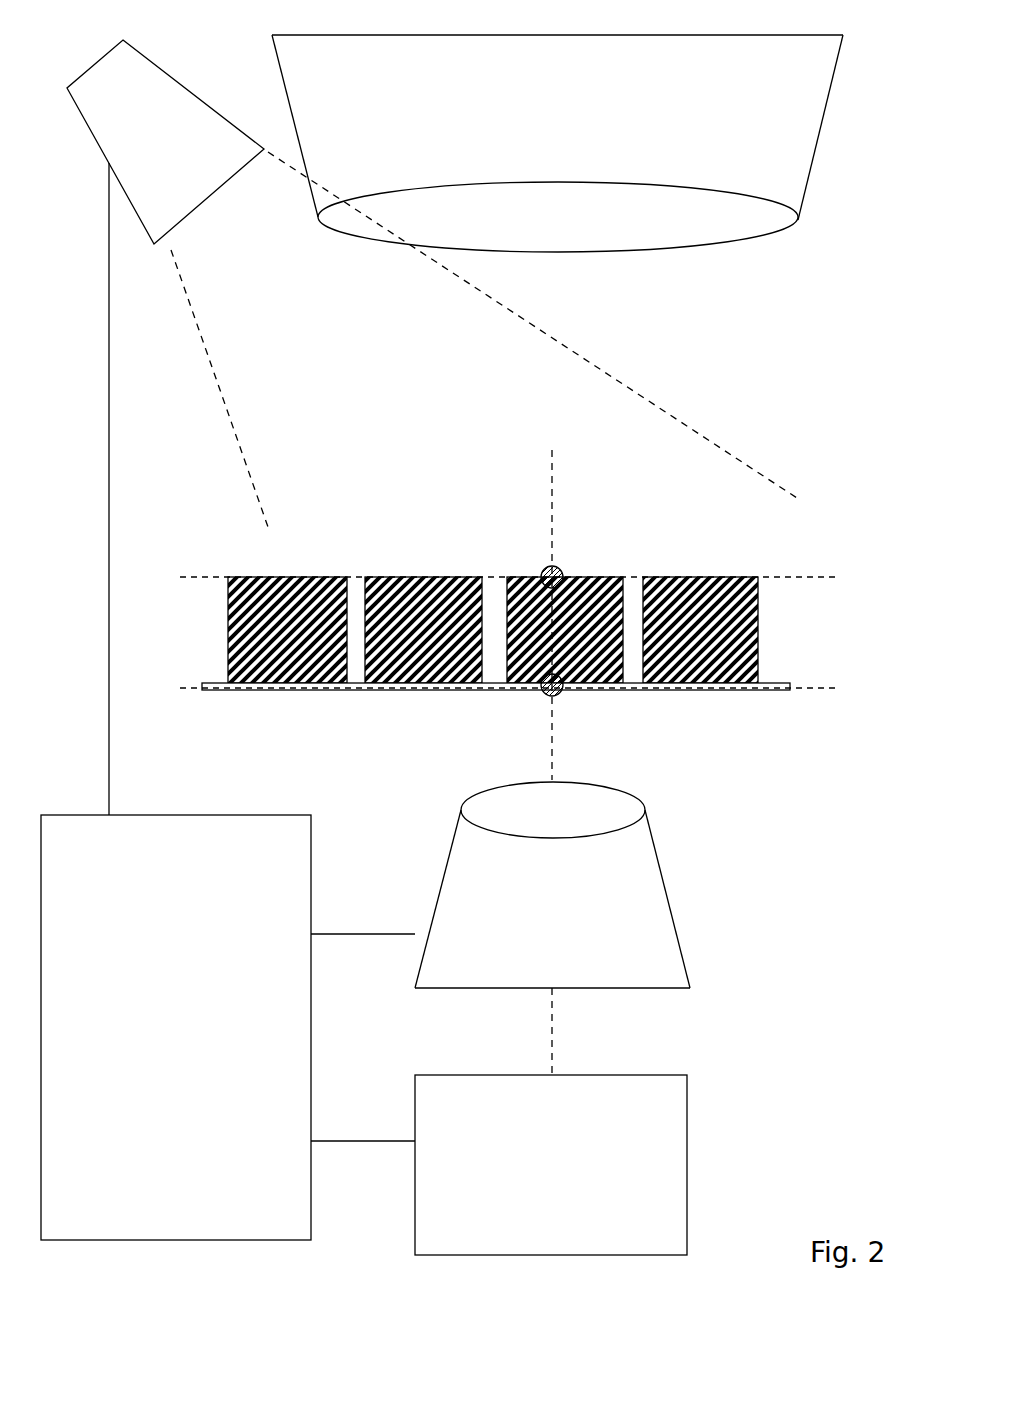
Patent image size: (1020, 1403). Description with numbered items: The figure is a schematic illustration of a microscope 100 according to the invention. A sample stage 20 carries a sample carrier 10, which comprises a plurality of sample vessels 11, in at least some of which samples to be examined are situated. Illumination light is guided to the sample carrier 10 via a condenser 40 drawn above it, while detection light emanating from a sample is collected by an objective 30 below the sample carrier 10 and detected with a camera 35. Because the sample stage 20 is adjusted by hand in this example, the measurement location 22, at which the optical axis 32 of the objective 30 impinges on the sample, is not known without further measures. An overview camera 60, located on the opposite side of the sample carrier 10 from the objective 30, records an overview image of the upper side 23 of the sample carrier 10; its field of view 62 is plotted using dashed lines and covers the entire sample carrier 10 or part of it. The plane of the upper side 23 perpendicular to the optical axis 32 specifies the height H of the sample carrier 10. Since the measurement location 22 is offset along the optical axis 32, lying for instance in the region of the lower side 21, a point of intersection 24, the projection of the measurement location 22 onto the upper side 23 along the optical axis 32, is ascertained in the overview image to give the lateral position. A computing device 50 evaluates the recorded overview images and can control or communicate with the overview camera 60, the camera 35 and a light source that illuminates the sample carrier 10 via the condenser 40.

The sample carrier 10 is at (443, 630).
The sample vessel 11 is at (278, 643).
The sample stage 20 is at (353, 690).
The lower side 21 is at (808, 690).
The measurement location 22 is at (548, 692).
The upper side 23 is at (632, 578).
The point of intersection 24 is at (560, 568).
The objective 30 is at (540, 921).
The optical axis 32 is at (555, 730).
The camera 35 is at (540, 1179).
The condenser 40 is at (542, 124).
The computing device 50 is at (156, 921).
The overview camera 60 is at (153, 169).
The field of view 62 is at (228, 413).
The microscope 100 is at (778, 855).
The height H is at (836, 572).